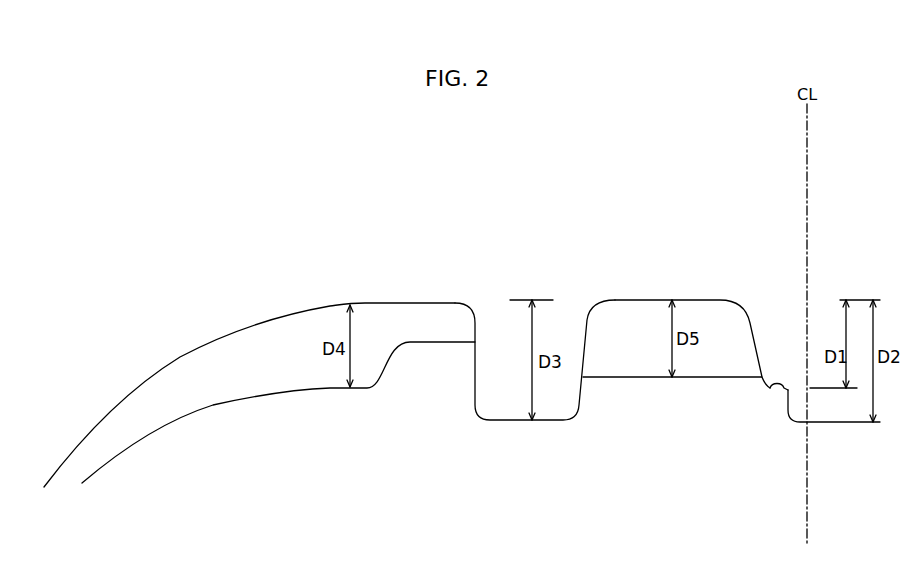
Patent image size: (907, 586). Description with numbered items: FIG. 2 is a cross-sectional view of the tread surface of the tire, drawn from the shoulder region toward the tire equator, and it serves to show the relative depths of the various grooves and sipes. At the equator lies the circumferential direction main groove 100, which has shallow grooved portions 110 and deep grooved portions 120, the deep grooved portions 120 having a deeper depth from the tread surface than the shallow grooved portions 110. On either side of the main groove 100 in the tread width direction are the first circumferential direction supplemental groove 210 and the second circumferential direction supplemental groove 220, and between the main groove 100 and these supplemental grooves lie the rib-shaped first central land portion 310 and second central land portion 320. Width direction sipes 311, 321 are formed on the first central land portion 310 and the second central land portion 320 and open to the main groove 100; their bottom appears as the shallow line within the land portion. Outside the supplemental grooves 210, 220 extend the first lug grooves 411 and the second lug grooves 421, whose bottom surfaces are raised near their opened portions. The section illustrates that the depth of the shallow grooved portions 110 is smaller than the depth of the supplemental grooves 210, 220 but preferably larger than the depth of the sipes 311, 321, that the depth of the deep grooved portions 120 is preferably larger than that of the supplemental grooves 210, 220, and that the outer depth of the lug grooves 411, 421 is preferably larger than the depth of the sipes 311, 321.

The circumferential direction main groove 100 is at (462, 359).
The shallow grooved portions 110 is at (772, 389).
The deep grooved portions 120 is at (800, 423).
The first circumferential direction supplemental groove 210 is at (537, 336).
The second circumferential direction supplemental groove 220 is at (563, 298).
The first central land portion 310 is at (692, 320).
The second central land portion 320 is at (652, 298).
The width direction sipes 311 is at (672, 421).
The width direction sipes 321 is at (630, 378).
The first lug grooves 411 is at (259, 386).
The second lug grooves 421 is at (272, 327).